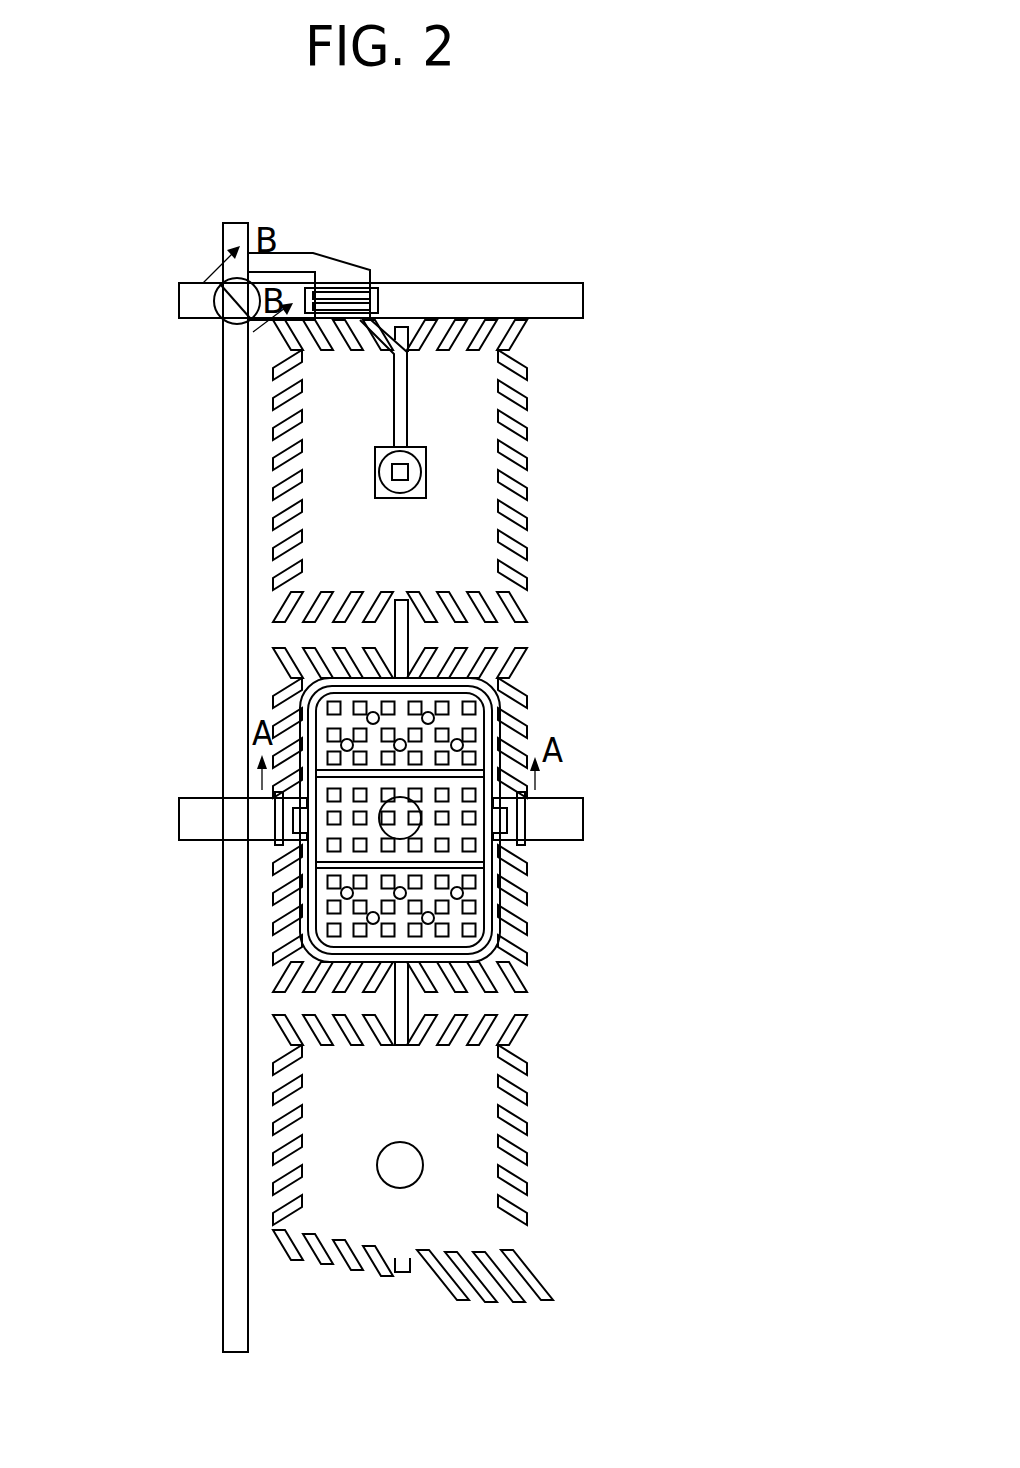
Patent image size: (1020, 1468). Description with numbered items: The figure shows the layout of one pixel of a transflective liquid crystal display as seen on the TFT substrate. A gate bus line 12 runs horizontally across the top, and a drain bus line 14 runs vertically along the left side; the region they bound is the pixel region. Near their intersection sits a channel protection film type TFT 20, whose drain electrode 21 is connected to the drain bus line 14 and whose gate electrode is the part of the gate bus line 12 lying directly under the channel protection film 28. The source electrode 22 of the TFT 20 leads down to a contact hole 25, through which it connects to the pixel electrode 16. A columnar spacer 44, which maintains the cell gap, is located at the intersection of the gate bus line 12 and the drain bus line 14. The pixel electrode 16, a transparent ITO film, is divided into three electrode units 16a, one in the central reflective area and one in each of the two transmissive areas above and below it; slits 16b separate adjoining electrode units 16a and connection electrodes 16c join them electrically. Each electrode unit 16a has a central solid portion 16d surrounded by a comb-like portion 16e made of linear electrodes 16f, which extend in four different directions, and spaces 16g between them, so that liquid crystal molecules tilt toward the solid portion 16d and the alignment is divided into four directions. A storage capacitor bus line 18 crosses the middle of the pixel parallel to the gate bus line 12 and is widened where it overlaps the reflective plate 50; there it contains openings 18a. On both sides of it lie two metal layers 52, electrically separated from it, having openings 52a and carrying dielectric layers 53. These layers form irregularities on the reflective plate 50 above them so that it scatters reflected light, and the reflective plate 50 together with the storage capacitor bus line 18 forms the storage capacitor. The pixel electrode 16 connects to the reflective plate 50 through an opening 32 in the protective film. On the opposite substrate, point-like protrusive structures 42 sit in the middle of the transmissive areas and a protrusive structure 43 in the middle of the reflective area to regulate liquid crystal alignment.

The gate bus line 12 is at (195, 303).
The drain bus line 14 is at (236, 222).
The pixel electrode 16 is at (435, 811).
The electrode unit 16a is at (542, 497).
The slit 16b is at (465, 634).
The connection electrode 16c is at (463, 643).
The solid portion 16d is at (323, 453).
The comb-like portion 16e is at (273, 408).
The linear electrode 16f is at (288, 529).
The space 16g is at (287, 531).
The storage capacitor bus line 18 is at (198, 822).
The opening 18a is at (283, 813).
The TFT 20 is at (342, 244).
The drain electrode 21 is at (347, 270).
The source electrode 22 is at (385, 326).
The contact hole 25 is at (392, 472).
The channel protection film 28 is at (380, 296).
The opening 32 is at (522, 830).
The protrusive structure 42 is at (386, 794).
The protrusive structure 43 is at (403, 838).
The columnar spacer 44 is at (217, 315).
The reflective plate 50 is at (288, 698).
The metal layer 52 is at (505, 682).
The opening 52a is at (493, 694).
The dielectric layer 53 is at (478, 725).